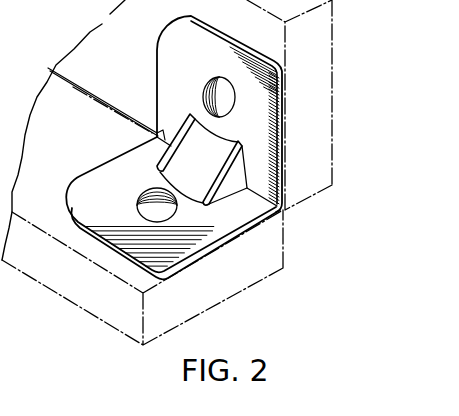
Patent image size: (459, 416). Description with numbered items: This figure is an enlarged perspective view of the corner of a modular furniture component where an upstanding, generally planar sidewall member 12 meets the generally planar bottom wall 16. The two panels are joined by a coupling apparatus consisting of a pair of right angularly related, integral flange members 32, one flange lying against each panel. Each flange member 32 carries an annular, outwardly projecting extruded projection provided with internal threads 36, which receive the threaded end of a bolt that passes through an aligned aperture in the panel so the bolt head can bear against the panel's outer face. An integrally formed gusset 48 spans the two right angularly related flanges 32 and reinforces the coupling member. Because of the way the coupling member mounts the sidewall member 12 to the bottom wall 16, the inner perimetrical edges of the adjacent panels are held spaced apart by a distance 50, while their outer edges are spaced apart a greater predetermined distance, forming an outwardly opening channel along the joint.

The sidewall member 12 is at (292, 186).
The bottom wall 16 is at (236, 283).
The flange member 32 is at (102, 178).
The internal threads 36 is at (184, 147).
The gusset 48 is at (233, 170).
The distance 50 is at (52, 93).